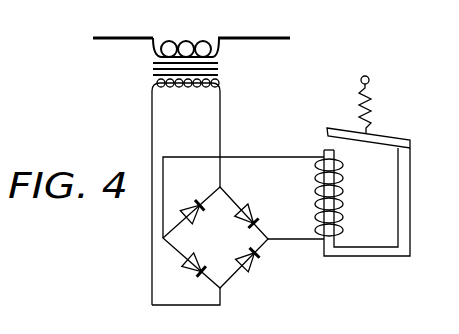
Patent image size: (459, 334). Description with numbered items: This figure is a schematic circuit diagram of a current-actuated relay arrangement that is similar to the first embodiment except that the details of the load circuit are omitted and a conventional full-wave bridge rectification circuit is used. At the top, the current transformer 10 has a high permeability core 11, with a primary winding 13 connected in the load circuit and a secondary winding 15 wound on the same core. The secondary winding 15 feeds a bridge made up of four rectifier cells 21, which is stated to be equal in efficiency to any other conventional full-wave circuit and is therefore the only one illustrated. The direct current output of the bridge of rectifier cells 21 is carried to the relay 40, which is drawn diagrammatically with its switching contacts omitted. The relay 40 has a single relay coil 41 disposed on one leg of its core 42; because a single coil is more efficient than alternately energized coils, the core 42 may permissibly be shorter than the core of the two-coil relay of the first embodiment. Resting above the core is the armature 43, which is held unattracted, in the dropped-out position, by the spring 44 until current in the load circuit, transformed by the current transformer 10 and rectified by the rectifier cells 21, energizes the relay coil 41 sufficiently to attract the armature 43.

The current transformer 10 is at (192, 159).
The high permeability core 11 is at (153, 71).
The primary winding 13 is at (187, 45).
The secondary winding 15 is at (179, 90).
The rectifier cells 21 is at (244, 203).
The relay 40 is at (379, 166).
The relay coil 41 is at (343, 173).
The core 42 is at (404, 213).
The armature 43 is at (337, 128).
The spring 44 is at (372, 103).